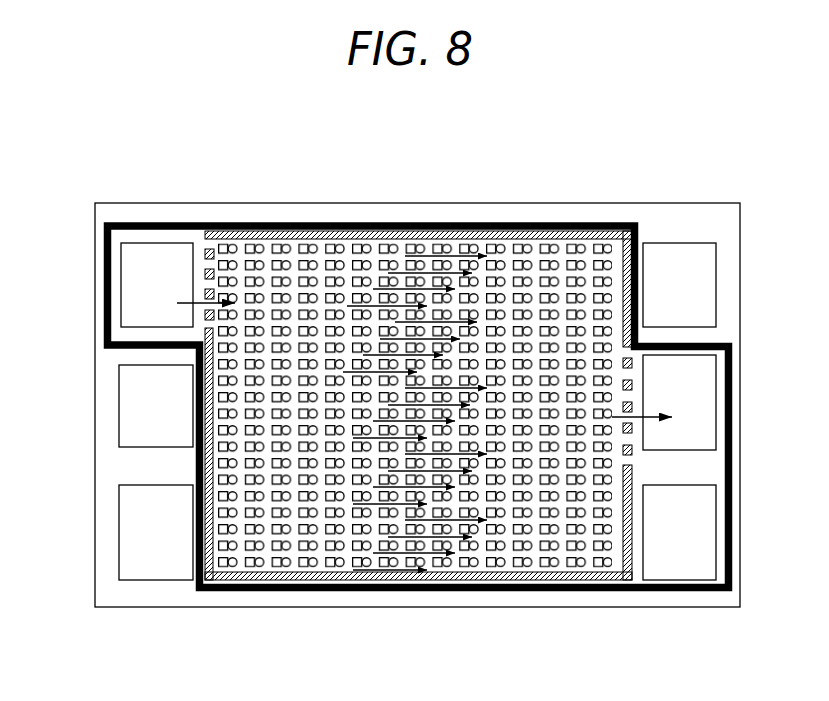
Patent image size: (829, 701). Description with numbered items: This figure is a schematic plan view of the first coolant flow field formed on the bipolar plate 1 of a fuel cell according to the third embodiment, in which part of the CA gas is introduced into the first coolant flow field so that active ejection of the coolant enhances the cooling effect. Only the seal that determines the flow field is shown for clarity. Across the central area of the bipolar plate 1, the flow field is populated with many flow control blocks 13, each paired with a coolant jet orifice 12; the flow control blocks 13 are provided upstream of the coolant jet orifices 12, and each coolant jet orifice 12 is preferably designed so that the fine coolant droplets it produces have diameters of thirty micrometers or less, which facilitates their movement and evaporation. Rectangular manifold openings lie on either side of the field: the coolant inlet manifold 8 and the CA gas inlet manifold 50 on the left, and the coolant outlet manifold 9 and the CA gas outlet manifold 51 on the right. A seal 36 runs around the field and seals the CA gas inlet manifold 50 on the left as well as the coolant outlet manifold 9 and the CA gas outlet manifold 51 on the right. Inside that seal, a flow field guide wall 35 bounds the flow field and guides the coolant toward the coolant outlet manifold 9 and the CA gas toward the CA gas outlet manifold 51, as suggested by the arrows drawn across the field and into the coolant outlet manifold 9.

The bipolar plate 1 is at (397, 215).
The coolant inlet manifold 8 is at (133, 403).
The coolant outlet manifold 9 is at (707, 403).
The coolant jet orifice 12 is at (555, 247).
The flow control block 13 is at (224, 247).
The flow field guide wall 35 is at (340, 573).
The seal 36 is at (500, 222).
The CA gas inlet manifold 50 is at (133, 287).
The CA gas outlet manifold 51 is at (707, 525).